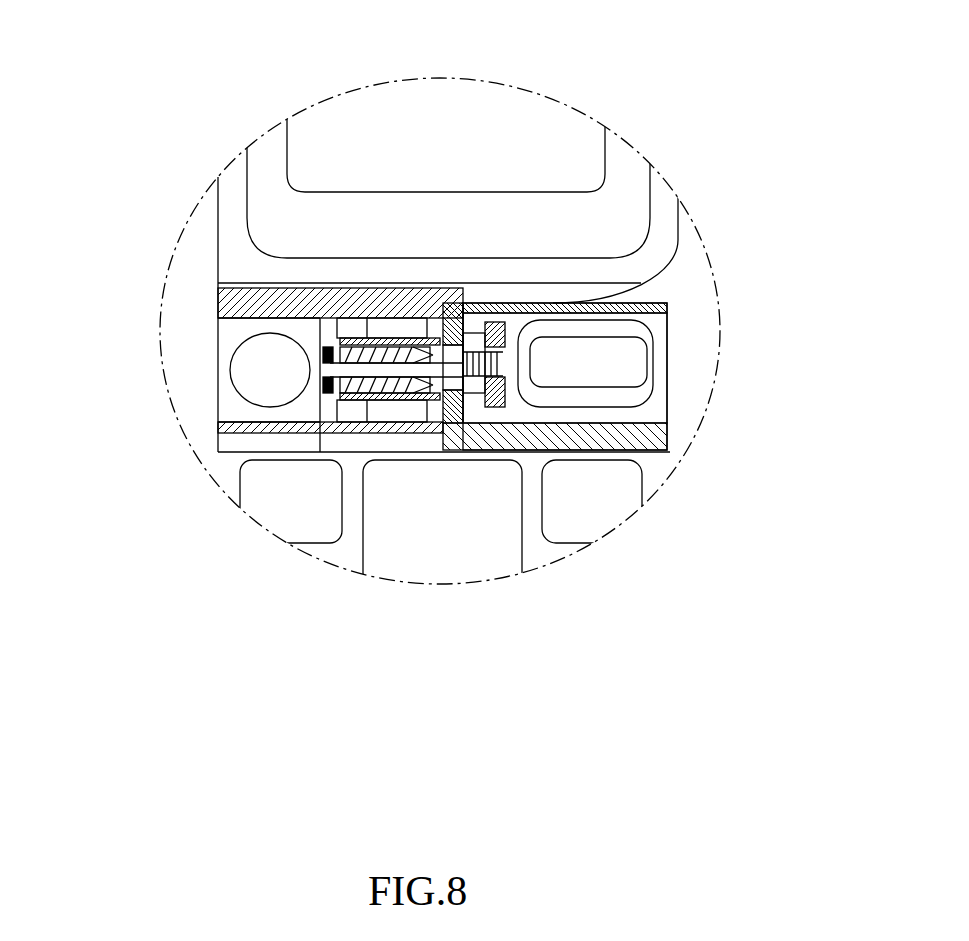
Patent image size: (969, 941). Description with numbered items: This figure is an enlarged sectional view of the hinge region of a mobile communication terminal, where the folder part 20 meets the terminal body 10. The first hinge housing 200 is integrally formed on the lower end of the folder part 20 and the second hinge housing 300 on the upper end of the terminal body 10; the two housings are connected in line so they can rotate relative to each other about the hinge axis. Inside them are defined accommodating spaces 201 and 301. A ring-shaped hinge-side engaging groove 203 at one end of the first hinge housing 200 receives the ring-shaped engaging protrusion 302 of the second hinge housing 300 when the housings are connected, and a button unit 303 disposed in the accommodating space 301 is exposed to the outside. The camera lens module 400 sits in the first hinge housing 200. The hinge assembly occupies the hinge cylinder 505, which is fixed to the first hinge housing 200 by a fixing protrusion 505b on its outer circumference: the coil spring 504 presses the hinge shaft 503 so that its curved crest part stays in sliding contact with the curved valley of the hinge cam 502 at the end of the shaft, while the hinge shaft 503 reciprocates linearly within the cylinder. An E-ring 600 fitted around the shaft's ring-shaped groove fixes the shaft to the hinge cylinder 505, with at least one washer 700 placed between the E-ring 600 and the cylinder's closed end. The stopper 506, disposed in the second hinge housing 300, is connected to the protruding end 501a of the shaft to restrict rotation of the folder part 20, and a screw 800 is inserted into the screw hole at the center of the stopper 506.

The terminal body 10 is at (604, 512).
The folder part 20 is at (628, 141).
The first hinge housing 200 is at (205, 297).
The accommodating space 201 is at (330, 320).
The hinge-side engaging groove 203 is at (480, 285).
The second hinge housing 300 is at (690, 438).
The accommodating space 301 is at (655, 412).
The engaging protrusion 302 is at (445, 428).
The button unit 303 is at (627, 364).
The camera lens module 400 is at (252, 380).
The one end of the shaft 501a is at (470, 298).
The hinge cam 502 is at (410, 425).
The hinge shaft 503 is at (395, 420).
The coil spring 504 is at (447, 300).
The hinge cylinder 505 is at (383, 405).
The fixing protrusion 505b is at (378, 325).
The stopper 506 is at (484, 400).
The E-ring 600 is at (284, 436).
The washer 700 is at (321, 436).
The screw 800 is at (655, 259).